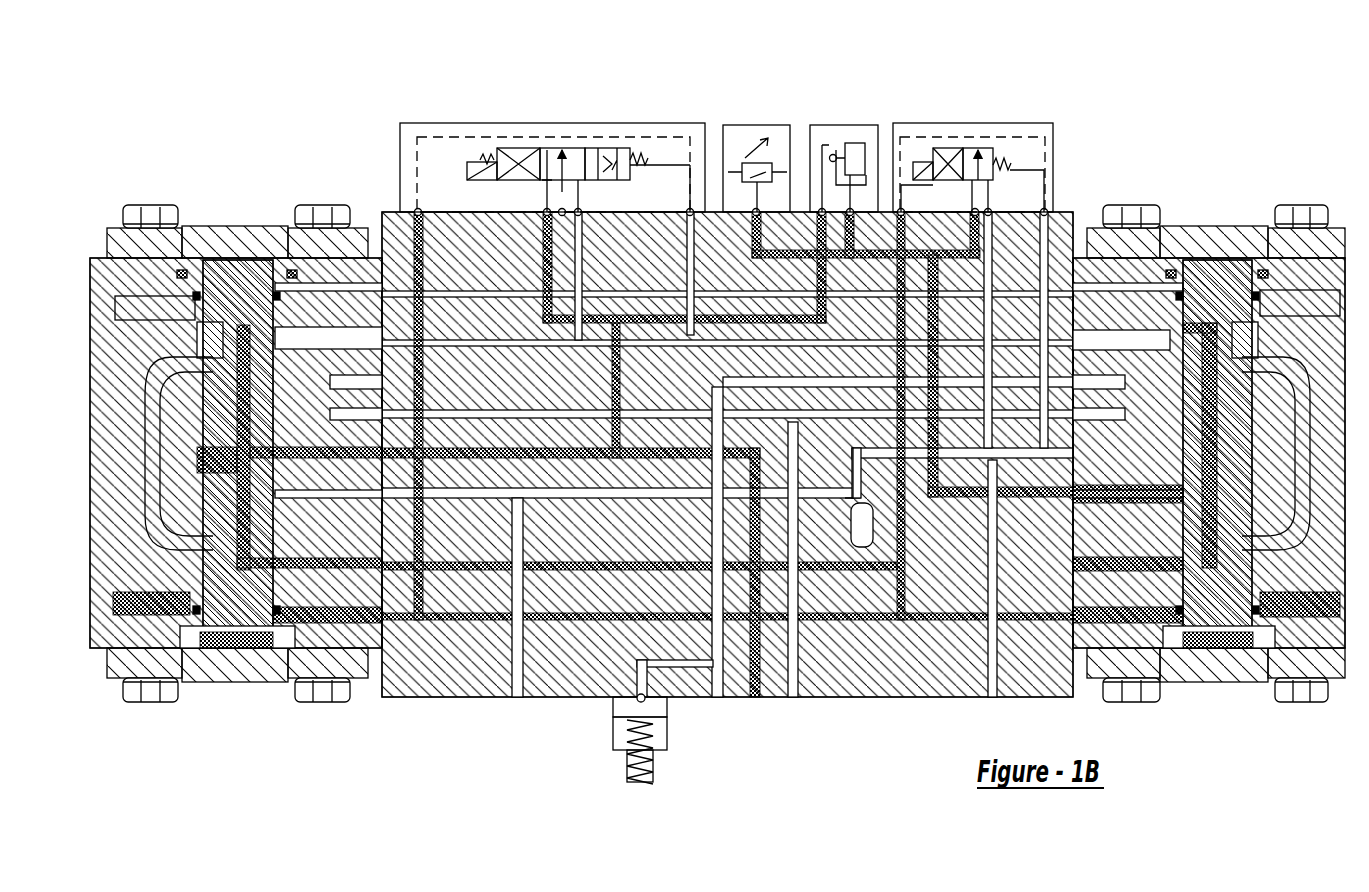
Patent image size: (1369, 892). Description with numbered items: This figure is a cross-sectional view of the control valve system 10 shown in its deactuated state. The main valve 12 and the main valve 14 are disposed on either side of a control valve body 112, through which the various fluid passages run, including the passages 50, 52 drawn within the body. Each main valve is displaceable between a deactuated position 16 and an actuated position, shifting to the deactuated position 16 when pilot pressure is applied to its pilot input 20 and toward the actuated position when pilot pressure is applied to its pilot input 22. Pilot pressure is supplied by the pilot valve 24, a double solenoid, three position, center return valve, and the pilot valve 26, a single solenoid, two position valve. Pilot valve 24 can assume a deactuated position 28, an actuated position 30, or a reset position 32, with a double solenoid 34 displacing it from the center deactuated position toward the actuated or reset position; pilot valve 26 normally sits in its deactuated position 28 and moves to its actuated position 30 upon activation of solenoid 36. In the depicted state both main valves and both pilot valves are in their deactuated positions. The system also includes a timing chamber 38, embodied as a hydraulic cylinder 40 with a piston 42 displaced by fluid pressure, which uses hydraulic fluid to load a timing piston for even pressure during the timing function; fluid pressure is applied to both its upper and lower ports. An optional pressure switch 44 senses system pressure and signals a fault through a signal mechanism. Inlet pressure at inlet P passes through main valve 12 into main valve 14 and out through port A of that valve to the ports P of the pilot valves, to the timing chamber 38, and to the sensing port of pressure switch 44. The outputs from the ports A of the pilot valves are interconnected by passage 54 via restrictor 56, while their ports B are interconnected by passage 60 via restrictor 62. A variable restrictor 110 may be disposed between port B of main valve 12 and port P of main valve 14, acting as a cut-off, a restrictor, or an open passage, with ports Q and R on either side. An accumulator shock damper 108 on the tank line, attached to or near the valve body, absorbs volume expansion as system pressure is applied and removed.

The control valve system 10 is at (721, 404).
The main valve 12 is at (100, 255).
The main valve 14 is at (1352, 212).
The deactuated position 16 is at (258, 258).
The pilot input 20 is at (228, 648).
The pilot input 22 is at (208, 258).
The pilot valve 24 is at (688, 126).
The pilot valve 26 is at (978, 118).
The deactuated position 28 is at (571, 148).
The actuated position 30 is at (513, 148).
The reset position 32 is at (630, 172).
The double solenoid 34 is at (460, 172).
The solenoid 36 is at (915, 160).
The timing chamber 38 is at (863, 131).
The hydraulic cylinder 40 is at (862, 205).
The piston 42 is at (858, 150).
The pressure switch 44 is at (752, 125).
The pressure passage 50 is at (573, 455).
The passage 52 is at (955, 498).
The passage 54 is at (600, 613).
The restrictor 56 is at (553, 620).
The passage 60 is at (718, 280).
The restrictor 62 is at (866, 300).
The accumulator shock damper 108 is at (615, 728).
The variable restrictor 110 is at (857, 483).
The control valve body 112 is at (448, 690).